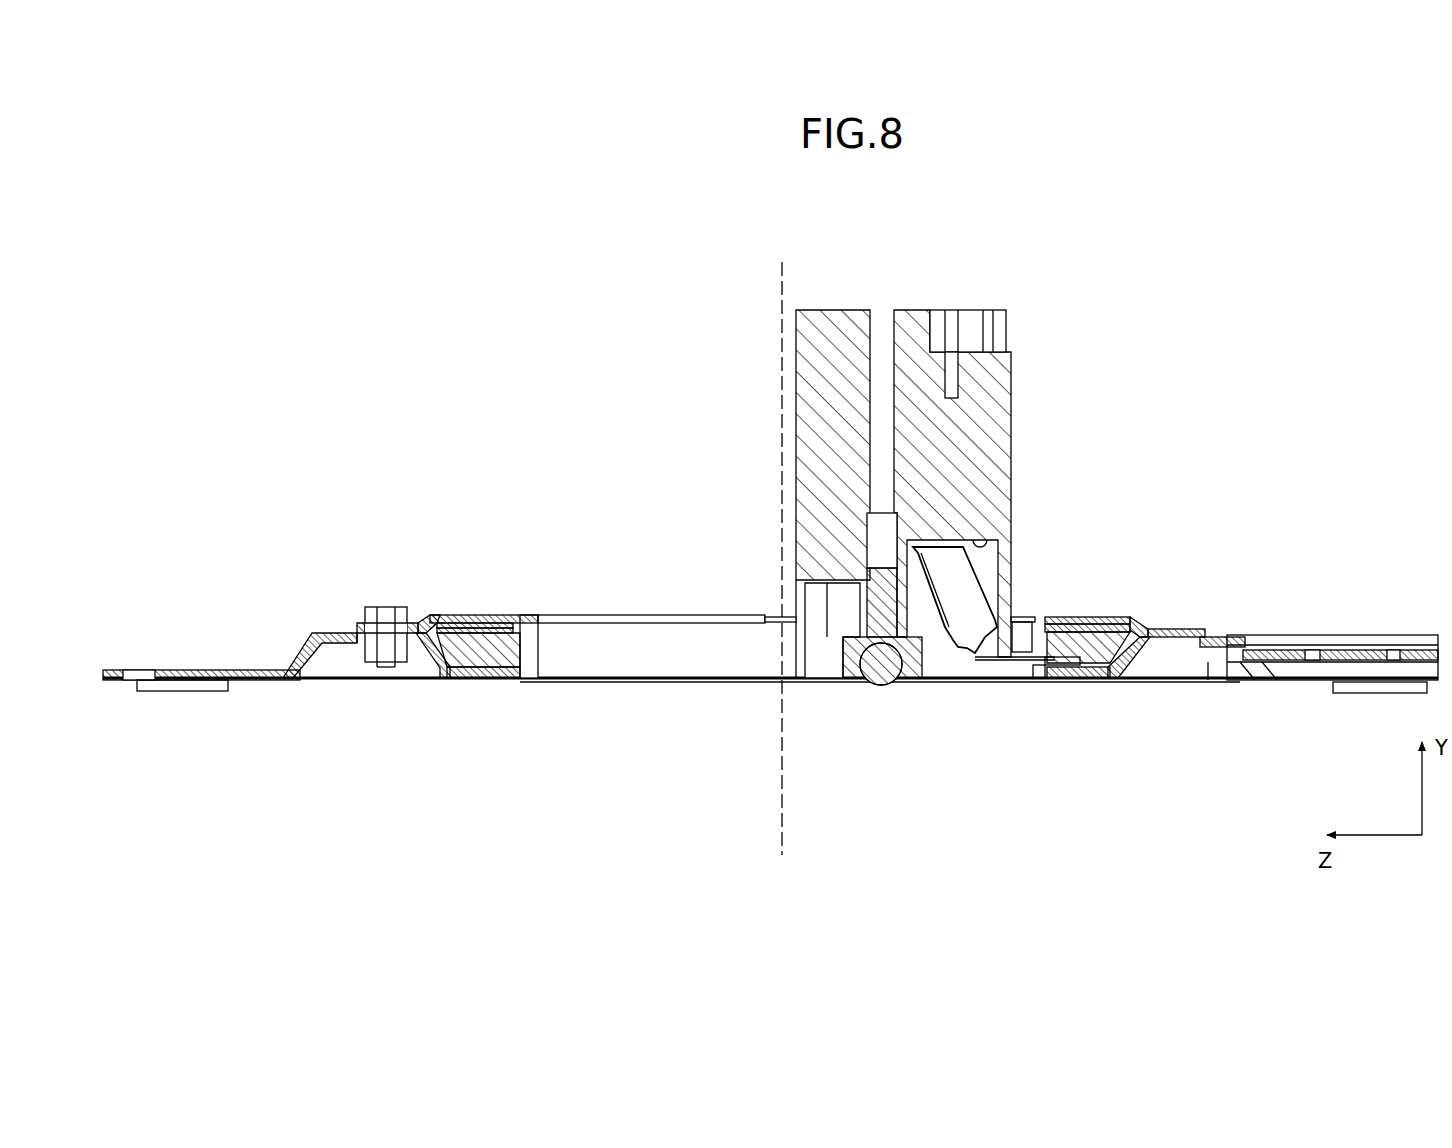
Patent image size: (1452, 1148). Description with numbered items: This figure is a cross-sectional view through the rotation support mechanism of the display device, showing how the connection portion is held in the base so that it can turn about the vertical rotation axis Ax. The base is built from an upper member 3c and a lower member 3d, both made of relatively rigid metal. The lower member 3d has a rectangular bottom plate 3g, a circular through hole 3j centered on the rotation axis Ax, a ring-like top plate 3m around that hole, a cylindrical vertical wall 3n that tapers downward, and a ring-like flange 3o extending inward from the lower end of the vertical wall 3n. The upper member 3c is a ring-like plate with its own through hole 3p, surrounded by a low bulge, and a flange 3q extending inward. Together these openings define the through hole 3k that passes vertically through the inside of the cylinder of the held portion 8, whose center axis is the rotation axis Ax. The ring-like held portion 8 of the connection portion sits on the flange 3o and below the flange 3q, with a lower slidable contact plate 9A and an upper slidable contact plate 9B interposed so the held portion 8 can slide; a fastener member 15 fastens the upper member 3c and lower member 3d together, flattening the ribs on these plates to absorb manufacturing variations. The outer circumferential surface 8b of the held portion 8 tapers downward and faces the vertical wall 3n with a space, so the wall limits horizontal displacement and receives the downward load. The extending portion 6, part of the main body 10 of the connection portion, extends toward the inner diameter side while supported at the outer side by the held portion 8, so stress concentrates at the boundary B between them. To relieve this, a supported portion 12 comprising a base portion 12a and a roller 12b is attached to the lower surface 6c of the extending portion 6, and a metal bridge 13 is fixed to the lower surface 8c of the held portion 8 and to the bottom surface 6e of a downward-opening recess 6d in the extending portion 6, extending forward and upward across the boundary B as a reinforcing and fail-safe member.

The main body 10 is at (790, 330).
The extending portion 6 is at (997, 410).
The lower surface 6c is at (827, 660).
The recess 6d is at (958, 663).
The bottom surface 6e is at (978, 547).
The held portion 8 is at (478, 620).
The outer circumferential surface 8b is at (445, 682).
The lower surface 8c is at (1065, 680).
The lower slidable contact plate 9A is at (462, 680).
The upper slidable contact plate 9B is at (477, 617).
The supported portion 12 is at (853, 680).
The base portion 12a is at (911, 660).
The roller 12b is at (883, 685).
The bridge 13 is at (942, 627).
The fastener member 15 is at (388, 606).
The upper member 3c is at (492, 612).
The lower member 3d is at (265, 683).
The bottom plate 3g is at (182, 668).
The through hole 3j is at (510, 682).
The through hole 3k is at (668, 608).
The top plate 3m is at (323, 633).
The vertical wall 3n is at (430, 682).
The flange 3o is at (480, 682).
The through hole 3p is at (527, 623).
The flange 3q is at (440, 620).
The boundary B is at (1023, 607).
The rotation axis Ax is at (782, 822).